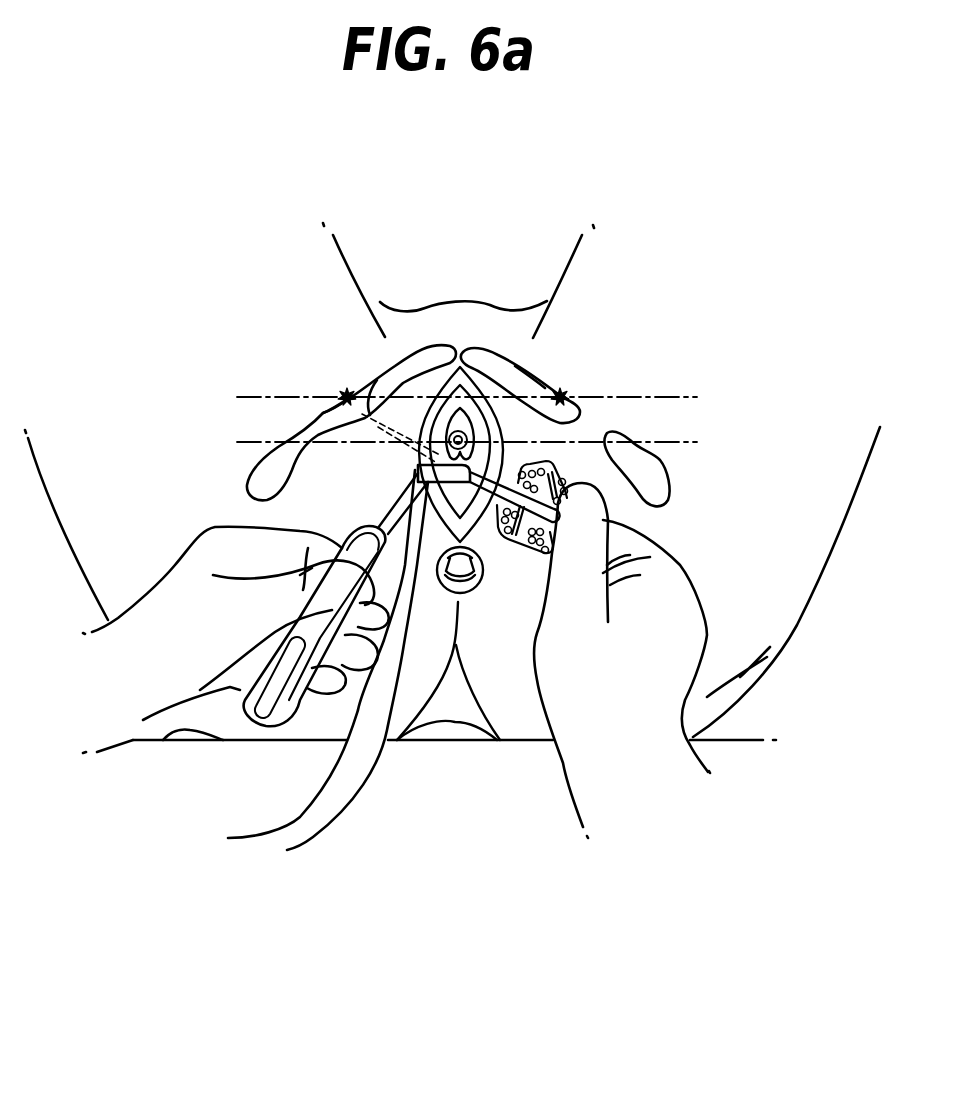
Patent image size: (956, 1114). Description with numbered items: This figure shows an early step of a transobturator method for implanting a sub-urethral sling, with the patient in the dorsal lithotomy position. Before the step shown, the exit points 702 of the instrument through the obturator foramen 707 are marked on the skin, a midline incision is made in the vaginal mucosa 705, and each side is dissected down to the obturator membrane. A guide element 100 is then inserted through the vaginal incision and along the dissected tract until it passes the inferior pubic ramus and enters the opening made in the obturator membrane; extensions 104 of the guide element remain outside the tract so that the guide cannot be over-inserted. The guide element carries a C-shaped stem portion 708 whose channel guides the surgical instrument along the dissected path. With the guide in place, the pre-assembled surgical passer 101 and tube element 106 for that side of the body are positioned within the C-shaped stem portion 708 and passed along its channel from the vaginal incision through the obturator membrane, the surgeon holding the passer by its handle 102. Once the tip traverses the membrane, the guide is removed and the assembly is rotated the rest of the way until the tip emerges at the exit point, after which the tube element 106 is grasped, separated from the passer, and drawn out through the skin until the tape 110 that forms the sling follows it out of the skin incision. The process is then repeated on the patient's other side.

The guide element 100 is at (643, 499).
The surgical passer 101 is at (401, 490).
The handle 102 is at (392, 405).
The extensions 104 is at (545, 535).
The tube element 106 is at (370, 522).
The tape 110 is at (328, 813).
The exit points 702 is at (347, 390).
The vaginal mucosa 705 is at (478, 428).
The obturator foramen 707 is at (323, 413).
The C-shaped stem portion 708 is at (493, 483).